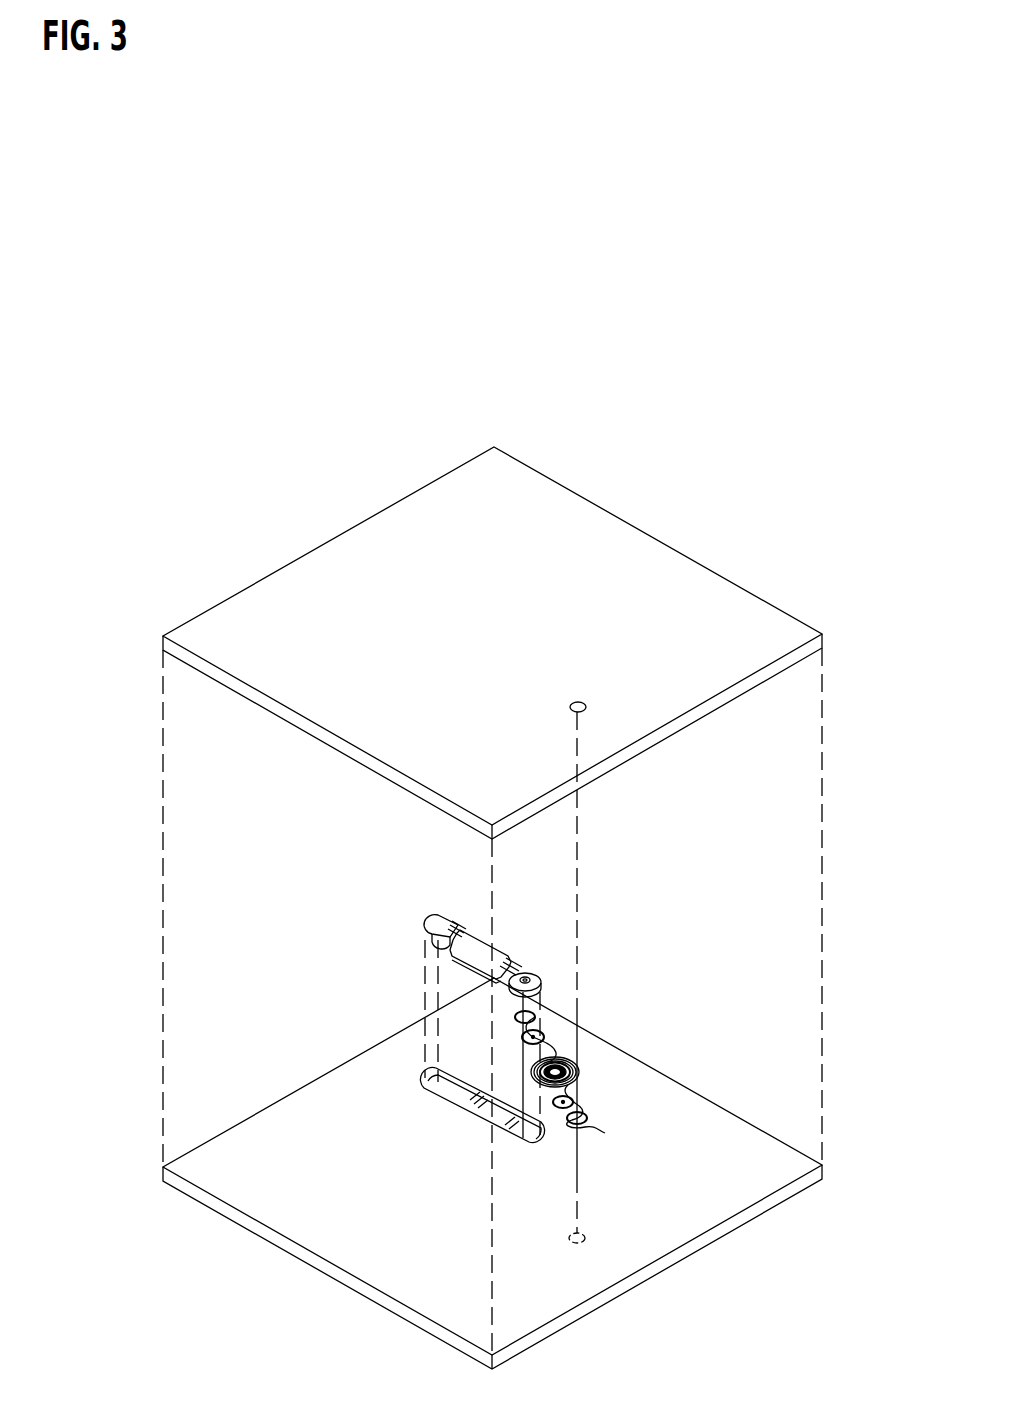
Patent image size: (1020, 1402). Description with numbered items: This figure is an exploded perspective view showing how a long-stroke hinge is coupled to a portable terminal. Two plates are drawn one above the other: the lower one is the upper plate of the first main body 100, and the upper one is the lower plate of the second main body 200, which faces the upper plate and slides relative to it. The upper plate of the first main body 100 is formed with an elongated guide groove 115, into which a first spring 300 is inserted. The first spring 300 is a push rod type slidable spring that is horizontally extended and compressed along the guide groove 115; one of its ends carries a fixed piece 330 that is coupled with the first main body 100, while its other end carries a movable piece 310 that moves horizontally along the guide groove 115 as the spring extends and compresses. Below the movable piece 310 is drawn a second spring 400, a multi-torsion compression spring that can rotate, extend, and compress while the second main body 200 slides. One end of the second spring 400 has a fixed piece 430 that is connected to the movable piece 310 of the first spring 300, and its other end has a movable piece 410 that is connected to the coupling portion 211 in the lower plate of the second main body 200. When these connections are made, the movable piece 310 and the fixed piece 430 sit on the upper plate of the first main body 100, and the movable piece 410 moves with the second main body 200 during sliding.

The first main body 100 is at (492, 1180).
The guide groove 115 is at (475, 1113).
The second main body 200 is at (492, 642).
The coupling portion 211 is at (578, 702).
The first spring 300 is at (492, 907).
The movable piece 310 is at (524, 975).
The fixed piece 330 is at (433, 917).
The second spring 400 is at (590, 1068).
The movable piece 410 is at (586, 1124).
The fixed piece 430 is at (540, 1013).